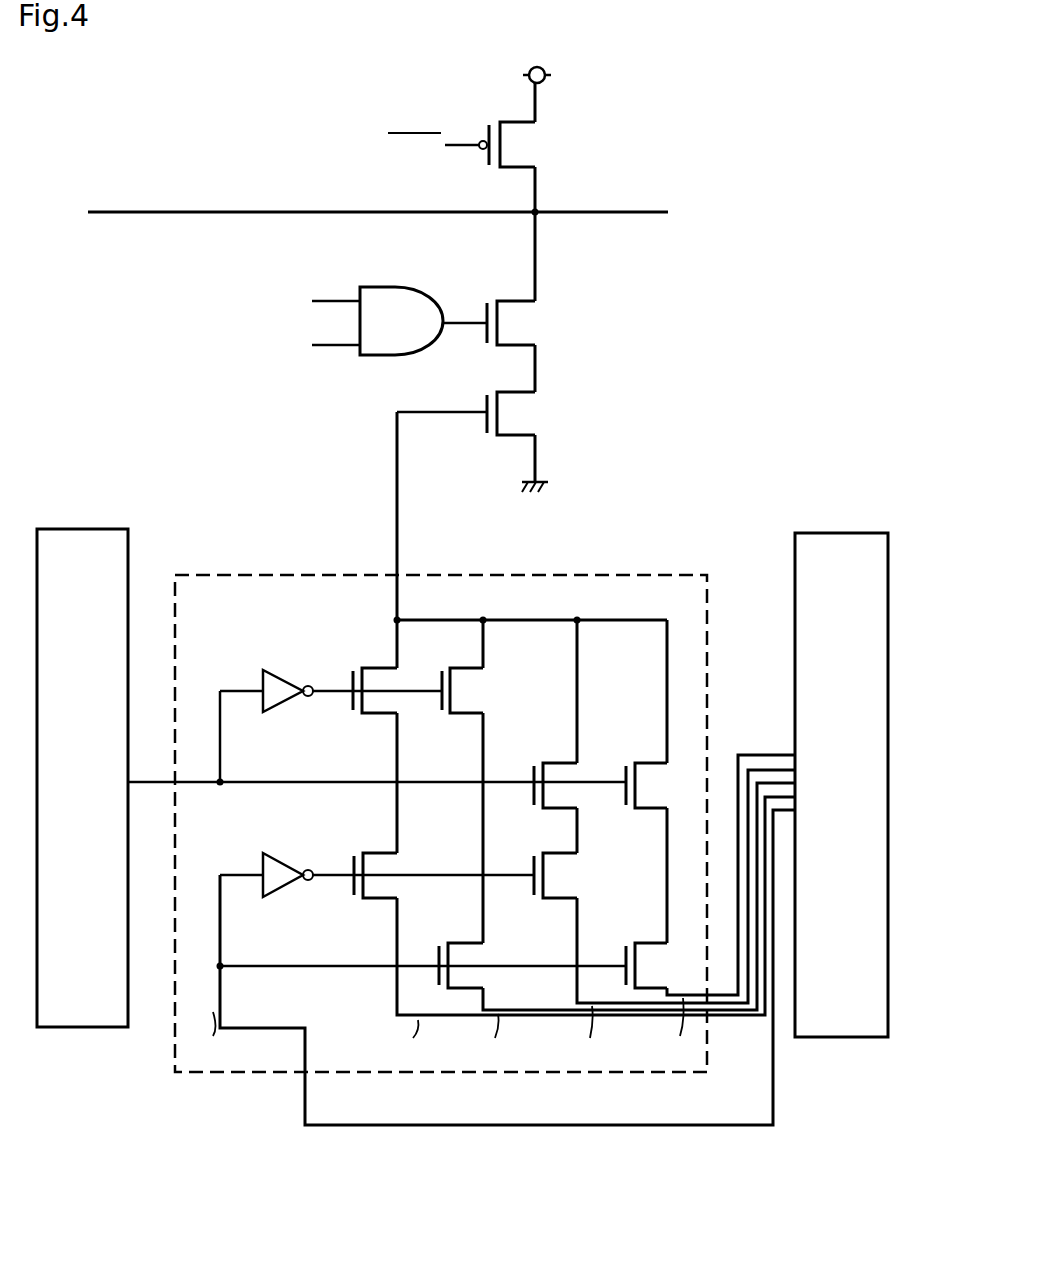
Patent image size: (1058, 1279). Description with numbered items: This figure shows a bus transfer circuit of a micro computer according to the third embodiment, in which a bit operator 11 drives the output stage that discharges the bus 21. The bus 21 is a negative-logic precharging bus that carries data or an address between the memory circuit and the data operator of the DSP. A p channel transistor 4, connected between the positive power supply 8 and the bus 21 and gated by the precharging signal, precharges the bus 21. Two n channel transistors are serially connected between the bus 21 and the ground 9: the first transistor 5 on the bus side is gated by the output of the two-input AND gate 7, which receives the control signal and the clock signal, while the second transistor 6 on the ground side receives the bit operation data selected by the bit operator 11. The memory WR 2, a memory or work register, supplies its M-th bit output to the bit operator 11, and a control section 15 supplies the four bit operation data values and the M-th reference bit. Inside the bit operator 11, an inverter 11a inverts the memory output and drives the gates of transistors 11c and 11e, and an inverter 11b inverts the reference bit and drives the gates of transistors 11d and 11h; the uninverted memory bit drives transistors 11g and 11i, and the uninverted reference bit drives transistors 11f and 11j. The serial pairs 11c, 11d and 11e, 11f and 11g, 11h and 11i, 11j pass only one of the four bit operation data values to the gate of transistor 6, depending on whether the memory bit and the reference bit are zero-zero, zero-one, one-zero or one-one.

The memory WR 2 is at (75, 1028).
The p channel transistor 4 is at (522, 150).
The first transistor 5 is at (520, 323).
The second transistor 6 is at (522, 425).
The AND gate 7 is at (412, 287).
The positive power supply 8 is at (552, 74).
The ground 9 is at (540, 503).
The bit operator 11 is at (638, 1073).
The inverter 11a is at (285, 668).
The inverter 11b is at (305, 828).
The n channel transistor 11c is at (354, 680).
The n channel transistor 11d is at (352, 862).
The n channel transistor 11e is at (442, 716).
The n channel transistor 11f is at (435, 955).
The n channel transistor 11g is at (524, 772).
The n channel transistor 11h is at (528, 862).
The n channel transistor 11i is at (616, 772).
The n channel transistor 11j is at (620, 955).
The control section 15 is at (858, 1038).
The bus 21 is at (590, 212).